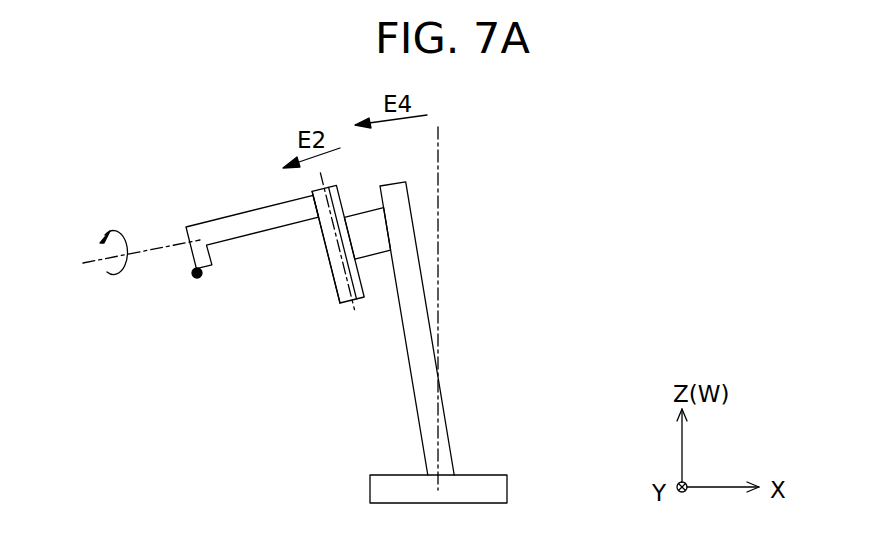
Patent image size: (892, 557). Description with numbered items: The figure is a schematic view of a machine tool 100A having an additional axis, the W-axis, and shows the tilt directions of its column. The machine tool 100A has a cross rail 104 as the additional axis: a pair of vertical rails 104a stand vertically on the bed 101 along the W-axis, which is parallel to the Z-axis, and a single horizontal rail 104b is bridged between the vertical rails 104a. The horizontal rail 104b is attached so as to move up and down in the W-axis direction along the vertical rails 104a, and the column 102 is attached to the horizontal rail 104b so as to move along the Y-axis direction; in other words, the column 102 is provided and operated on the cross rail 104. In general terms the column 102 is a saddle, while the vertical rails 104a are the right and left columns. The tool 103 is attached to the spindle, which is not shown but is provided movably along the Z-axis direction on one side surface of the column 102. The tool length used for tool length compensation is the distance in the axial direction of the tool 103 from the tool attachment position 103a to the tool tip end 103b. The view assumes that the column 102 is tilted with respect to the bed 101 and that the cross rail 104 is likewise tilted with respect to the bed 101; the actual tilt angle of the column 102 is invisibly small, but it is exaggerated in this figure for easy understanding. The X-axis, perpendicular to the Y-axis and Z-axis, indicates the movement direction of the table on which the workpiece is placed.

The machine tool 100A is at (530, 157).
The bed 101 is at (477, 475).
The column 102 is at (340, 195).
The tool 103 is at (227, 215).
The tool attachment position 103a is at (318, 220).
The tool tip end 103b is at (197, 278).
The cross rail 104 is at (399, 403).
The vertical rails 104a is at (420, 277).
The horizontal rail 104b is at (377, 232).